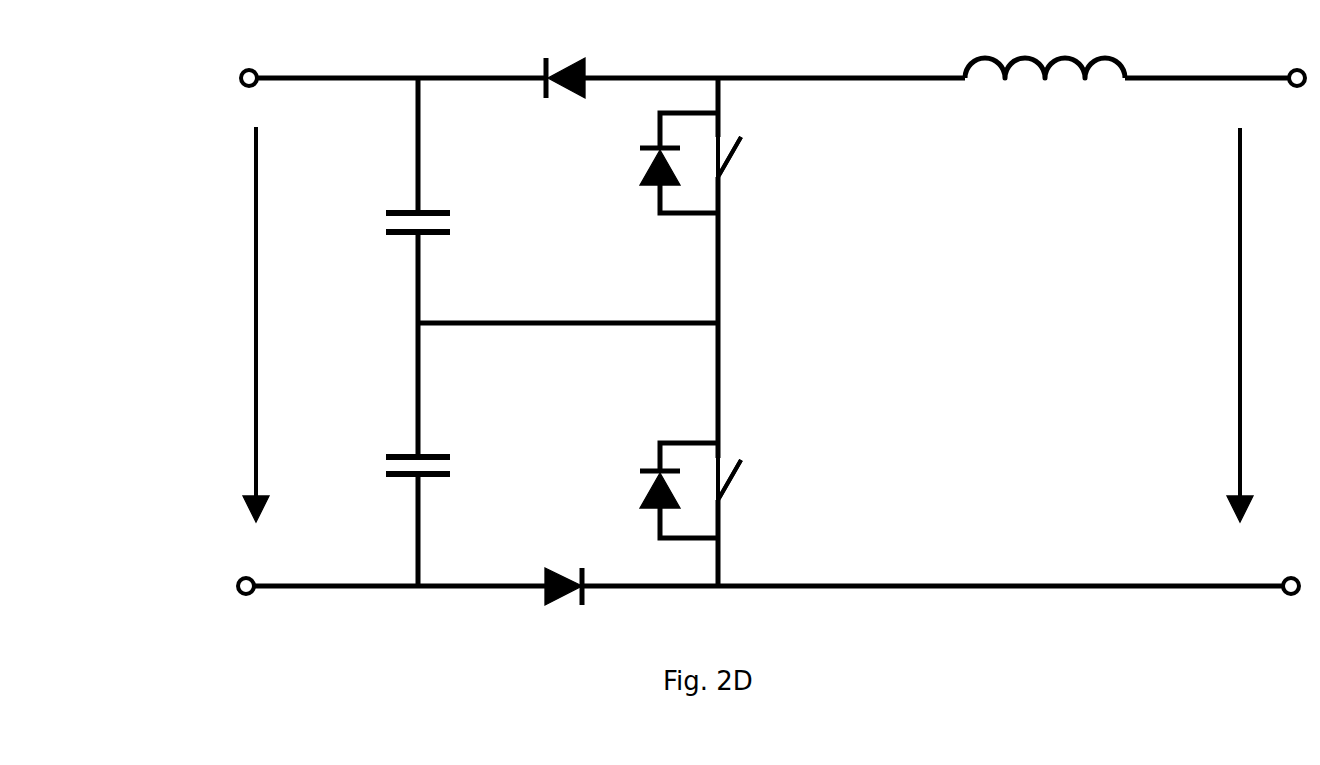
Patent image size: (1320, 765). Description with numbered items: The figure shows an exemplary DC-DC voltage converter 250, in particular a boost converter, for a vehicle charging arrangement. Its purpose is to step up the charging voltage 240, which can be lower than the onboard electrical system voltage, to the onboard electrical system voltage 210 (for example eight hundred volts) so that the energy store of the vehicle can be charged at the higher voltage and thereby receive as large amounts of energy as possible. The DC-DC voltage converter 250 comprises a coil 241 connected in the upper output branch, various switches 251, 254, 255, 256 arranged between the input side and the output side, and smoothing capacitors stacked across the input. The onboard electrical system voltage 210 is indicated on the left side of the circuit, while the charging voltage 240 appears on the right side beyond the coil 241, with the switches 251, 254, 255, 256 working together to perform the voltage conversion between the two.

The onboard electrical system voltage 210 is at (270, 180).
The charging voltage 240 is at (1238, 311).
The coil 241 is at (1030, 90).
The DC-DC voltage converter 250 is at (197, 142).
The switch 251 is at (574, 100).
The switch 254 is at (559, 566).
The switch 255 is at (742, 168).
The switch 256 is at (748, 488).